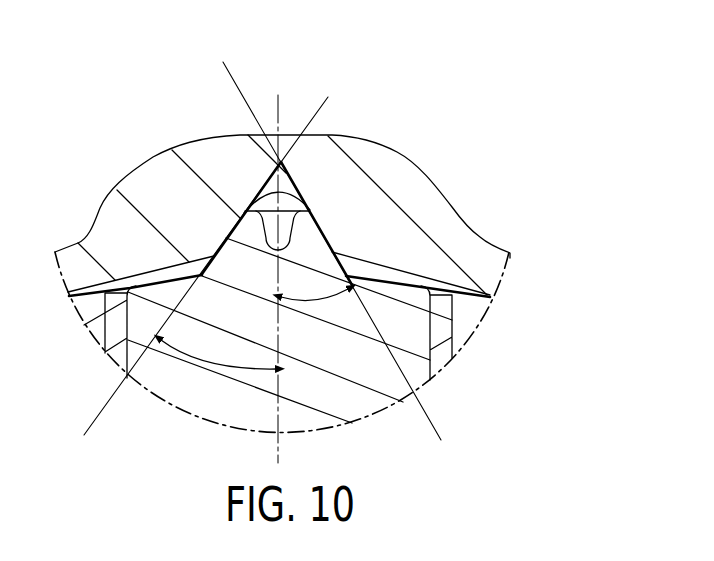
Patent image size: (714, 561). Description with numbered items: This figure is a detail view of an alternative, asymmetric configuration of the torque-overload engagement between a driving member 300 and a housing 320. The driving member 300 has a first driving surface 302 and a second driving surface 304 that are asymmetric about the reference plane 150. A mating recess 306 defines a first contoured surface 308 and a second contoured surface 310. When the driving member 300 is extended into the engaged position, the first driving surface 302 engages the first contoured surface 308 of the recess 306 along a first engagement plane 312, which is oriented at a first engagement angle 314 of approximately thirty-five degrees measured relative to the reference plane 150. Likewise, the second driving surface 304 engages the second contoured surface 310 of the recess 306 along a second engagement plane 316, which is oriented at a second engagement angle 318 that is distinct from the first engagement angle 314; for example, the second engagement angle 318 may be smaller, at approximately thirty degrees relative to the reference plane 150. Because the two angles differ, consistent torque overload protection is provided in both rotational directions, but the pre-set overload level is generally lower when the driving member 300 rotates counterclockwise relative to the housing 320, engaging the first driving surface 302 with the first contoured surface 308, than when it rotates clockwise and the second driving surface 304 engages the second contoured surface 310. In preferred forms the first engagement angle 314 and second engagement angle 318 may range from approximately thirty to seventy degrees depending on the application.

The reference plane 150 is at (279, 455).
The driving member 300 is at (241, 430).
The first driving surface 302 is at (214, 260).
The second driving surface 304 is at (333, 266).
The mating recess 306 is at (264, 188).
The first contoured surface 308 is at (240, 217).
The second contoured surface 310 is at (318, 211).
The first engagement plane 312 is at (327, 98).
The first engagement angle 314 is at (173, 355).
The second engagement plane 316 is at (225, 62).
The second engagement angle 318 is at (312, 303).
The housing 320 is at (481, 233).